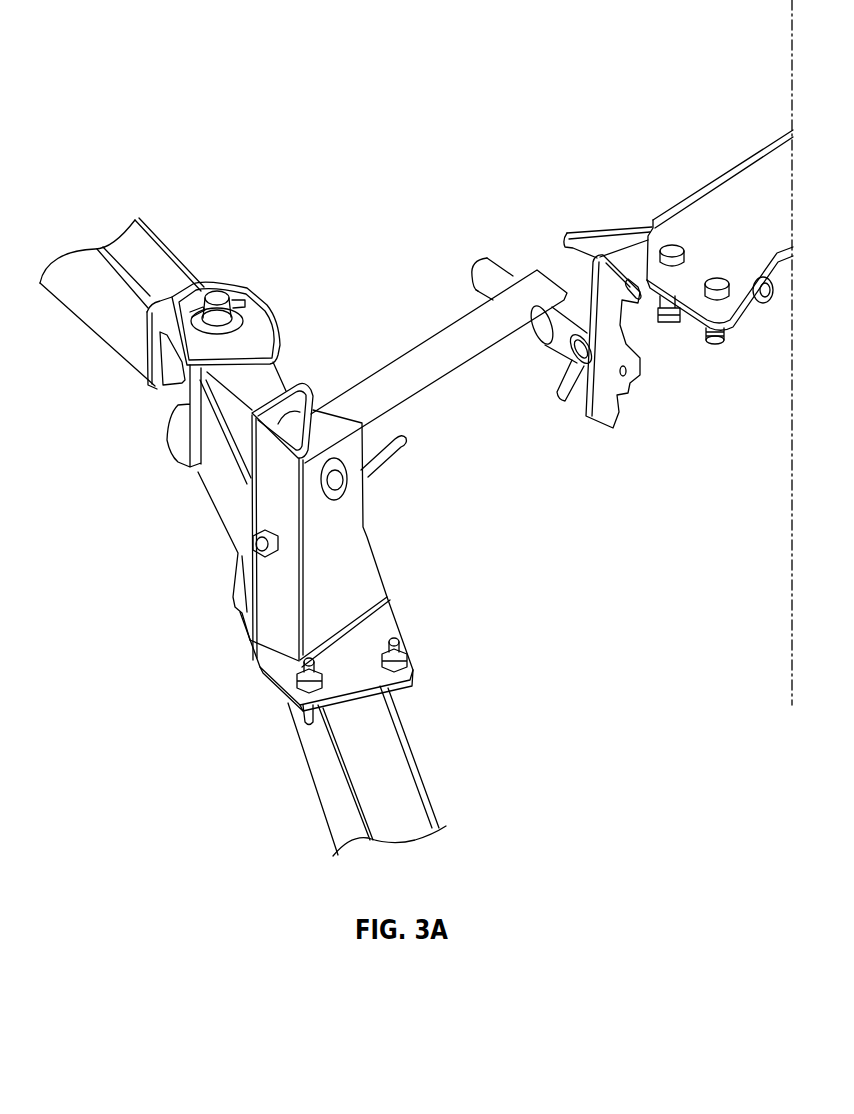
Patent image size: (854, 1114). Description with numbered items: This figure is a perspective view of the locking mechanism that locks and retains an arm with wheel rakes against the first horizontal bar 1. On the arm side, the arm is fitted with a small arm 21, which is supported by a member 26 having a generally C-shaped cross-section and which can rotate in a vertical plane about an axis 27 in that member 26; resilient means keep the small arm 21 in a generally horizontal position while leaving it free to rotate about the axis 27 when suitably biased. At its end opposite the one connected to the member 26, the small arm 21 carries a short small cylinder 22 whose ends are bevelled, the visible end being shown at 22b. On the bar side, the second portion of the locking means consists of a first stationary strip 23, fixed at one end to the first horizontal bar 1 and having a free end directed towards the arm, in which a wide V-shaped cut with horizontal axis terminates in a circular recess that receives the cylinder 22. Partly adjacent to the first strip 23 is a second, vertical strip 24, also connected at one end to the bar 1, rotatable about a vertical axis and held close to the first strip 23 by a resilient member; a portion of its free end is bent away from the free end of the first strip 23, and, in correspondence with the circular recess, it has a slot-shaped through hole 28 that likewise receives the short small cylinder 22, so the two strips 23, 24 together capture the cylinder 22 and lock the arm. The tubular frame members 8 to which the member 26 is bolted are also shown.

The first horizontal bar 1 is at (790, 58).
The frame tube 8 is at (152, 257).
The small arm 21 is at (445, 397).
The short small cylinder 22 is at (479, 256).
The pin end 22b is at (551, 337).
The first stationary strip 23 is at (598, 237).
The second strip 24 is at (628, 404).
The member with generally C-shaped cross-section 26 is at (356, 585).
The axis 27 is at (348, 478).
The slot-shaped through hole 28 is at (632, 292).